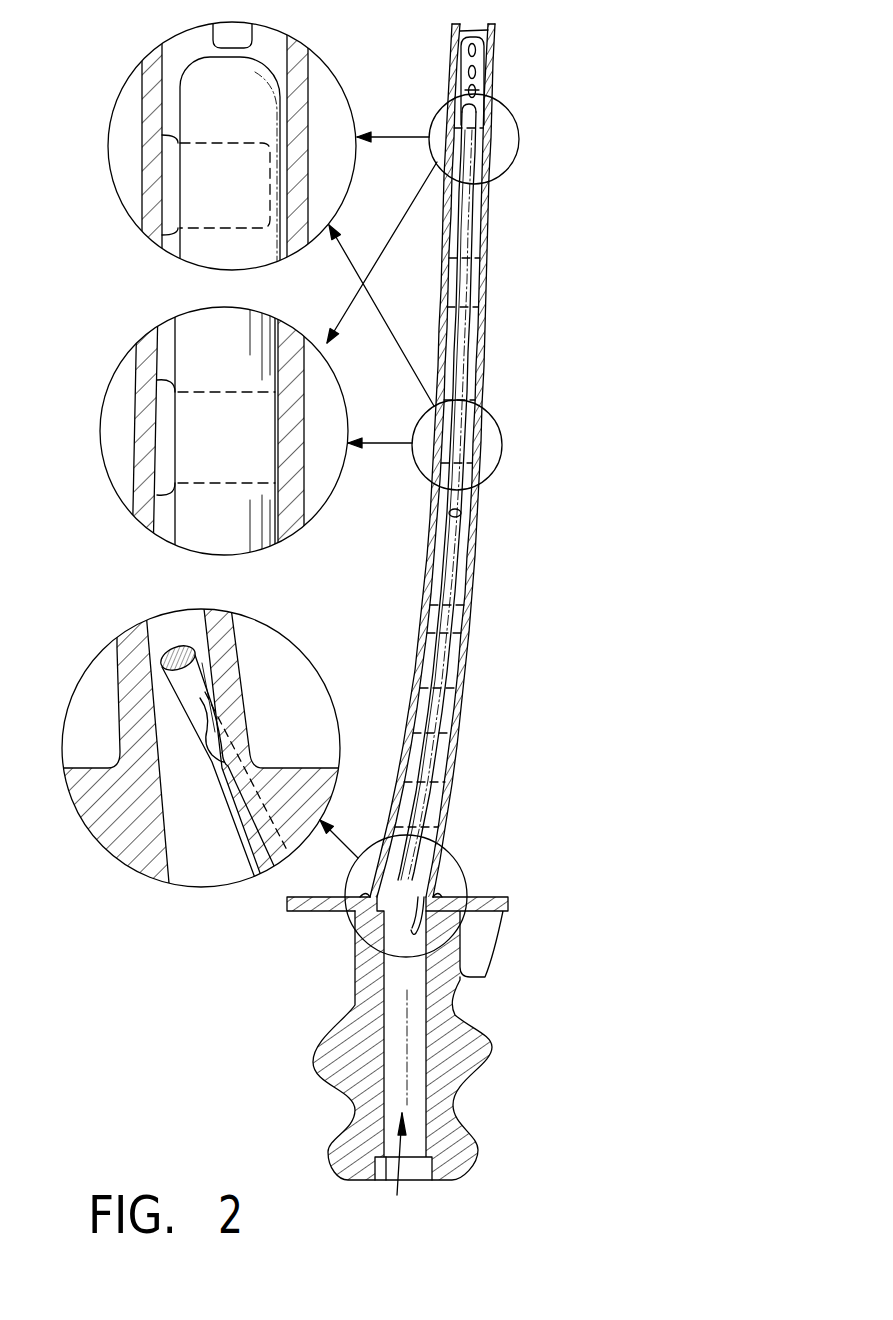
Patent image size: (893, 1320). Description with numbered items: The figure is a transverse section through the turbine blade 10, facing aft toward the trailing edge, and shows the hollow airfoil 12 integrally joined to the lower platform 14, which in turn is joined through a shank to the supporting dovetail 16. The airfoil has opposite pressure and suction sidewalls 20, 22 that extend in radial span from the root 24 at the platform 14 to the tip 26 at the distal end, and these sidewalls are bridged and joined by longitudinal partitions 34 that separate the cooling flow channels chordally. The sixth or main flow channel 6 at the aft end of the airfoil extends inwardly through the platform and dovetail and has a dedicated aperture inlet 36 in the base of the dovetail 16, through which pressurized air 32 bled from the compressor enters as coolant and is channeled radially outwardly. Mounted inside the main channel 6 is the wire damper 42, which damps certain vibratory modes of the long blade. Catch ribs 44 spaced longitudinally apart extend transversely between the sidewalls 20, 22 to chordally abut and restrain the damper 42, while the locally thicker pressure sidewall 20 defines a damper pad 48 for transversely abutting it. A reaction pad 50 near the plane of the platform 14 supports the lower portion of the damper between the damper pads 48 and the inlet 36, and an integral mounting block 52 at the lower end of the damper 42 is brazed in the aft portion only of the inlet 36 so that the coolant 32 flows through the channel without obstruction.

The sixth flow channel 6 is at (452, 513).
The turbine blade 10 is at (512, 236).
The airfoil 12 is at (490, 542).
The platform 14 is at (492, 895).
The dovetail 16 is at (477, 1037).
The pressure sidewall 20 is at (473, 632).
The suction sidewall 22 is at (420, 658).
The root 24 is at (420, 838).
The tip 26 is at (497, 26).
The pressurized air 32 is at (342, 1222).
The longitudinal partitions 34 is at (483, 65).
The aperture inlet 36 is at (428, 1181).
The wire damper 42 is at (467, 322).
The catch ribs 44 is at (451, 283).
The damper pad 48 is at (497, 463).
The reaction pad 50 is at (362, 938).
The mounting block 52 is at (388, 1173).